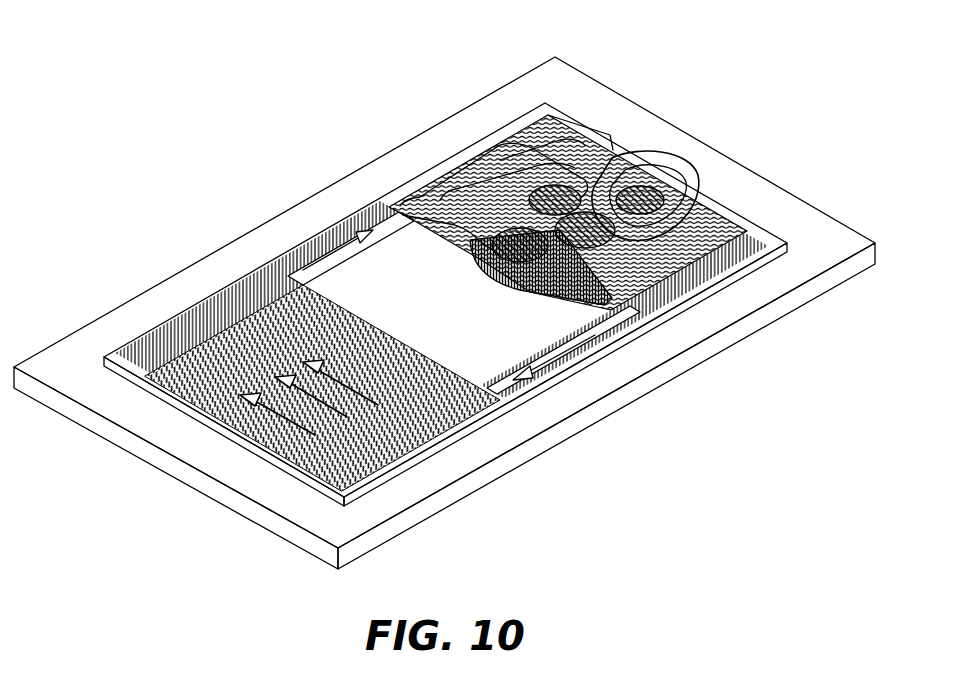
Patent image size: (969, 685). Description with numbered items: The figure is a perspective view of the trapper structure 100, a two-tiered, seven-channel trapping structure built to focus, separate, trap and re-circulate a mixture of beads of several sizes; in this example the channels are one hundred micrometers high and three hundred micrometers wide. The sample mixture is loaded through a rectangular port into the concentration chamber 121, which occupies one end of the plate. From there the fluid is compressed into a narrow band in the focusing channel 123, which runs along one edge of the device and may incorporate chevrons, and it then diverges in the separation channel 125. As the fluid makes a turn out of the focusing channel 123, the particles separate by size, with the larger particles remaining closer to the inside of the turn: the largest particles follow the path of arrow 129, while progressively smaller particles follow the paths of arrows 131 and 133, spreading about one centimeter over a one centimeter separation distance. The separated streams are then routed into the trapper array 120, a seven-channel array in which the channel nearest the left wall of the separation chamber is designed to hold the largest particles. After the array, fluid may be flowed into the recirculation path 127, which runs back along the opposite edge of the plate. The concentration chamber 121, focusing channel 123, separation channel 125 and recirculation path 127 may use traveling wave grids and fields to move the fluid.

The trapper structure 100 is at (679, 62).
The trapper array 120 is at (687, 170).
The concentration chamber 121 is at (390, 360).
The focusing channel 123 is at (283, 266).
The separation channel 125 is at (537, 123).
The recirculation path 127 is at (632, 317).
The arrow 129 is at (444, 233).
The arrow 131 is at (457, 233).
The arrow 133 is at (557, 153).